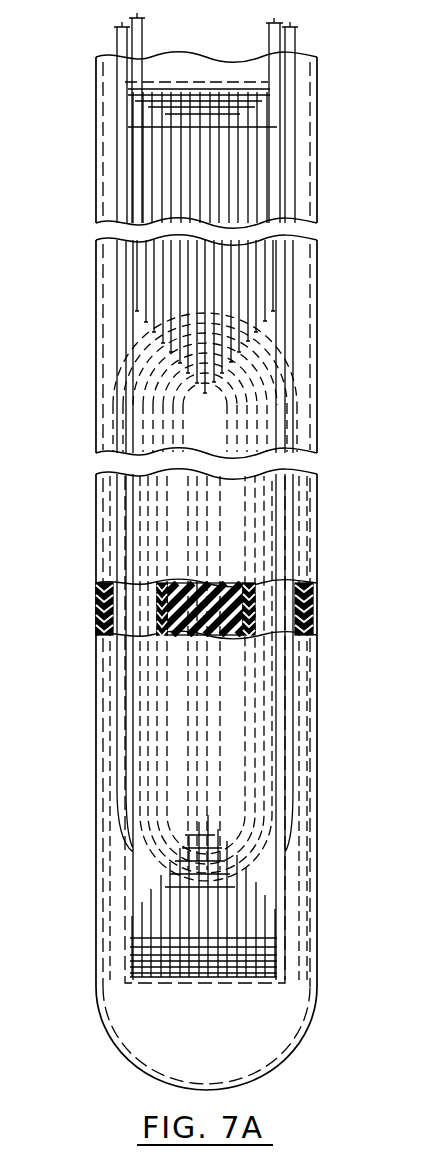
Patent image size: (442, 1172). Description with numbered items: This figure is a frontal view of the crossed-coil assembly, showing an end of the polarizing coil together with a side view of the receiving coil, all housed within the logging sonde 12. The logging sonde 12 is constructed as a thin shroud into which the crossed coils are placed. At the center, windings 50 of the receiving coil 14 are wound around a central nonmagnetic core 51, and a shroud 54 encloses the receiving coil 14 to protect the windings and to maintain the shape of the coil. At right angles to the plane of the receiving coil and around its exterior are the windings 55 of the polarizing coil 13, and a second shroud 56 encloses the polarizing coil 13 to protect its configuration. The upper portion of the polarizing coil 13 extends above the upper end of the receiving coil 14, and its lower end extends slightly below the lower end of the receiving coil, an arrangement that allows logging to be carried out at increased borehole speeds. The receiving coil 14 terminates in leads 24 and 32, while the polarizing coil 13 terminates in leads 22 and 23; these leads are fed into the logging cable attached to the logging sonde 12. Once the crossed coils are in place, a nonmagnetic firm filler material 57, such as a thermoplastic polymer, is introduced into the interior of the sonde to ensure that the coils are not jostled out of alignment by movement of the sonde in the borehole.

The logging sonde 12 is at (265, 1025).
The polarizing coil 13 is at (235, 152).
The receiving coil 14 is at (262, 388).
The lead 22 is at (117, 40).
The lead 23 is at (296, 40).
The lead 24 is at (143, 31).
The lead 32 is at (269, 37).
The windings 50 is at (267, 760).
The central nonmagnetic core 51 is at (228, 632).
The shroud 54 is at (157, 600).
The windings 55 is at (260, 281).
The second shroud 56 is at (287, 930).
The nonmagnetic firm filler material 57 is at (100, 597).